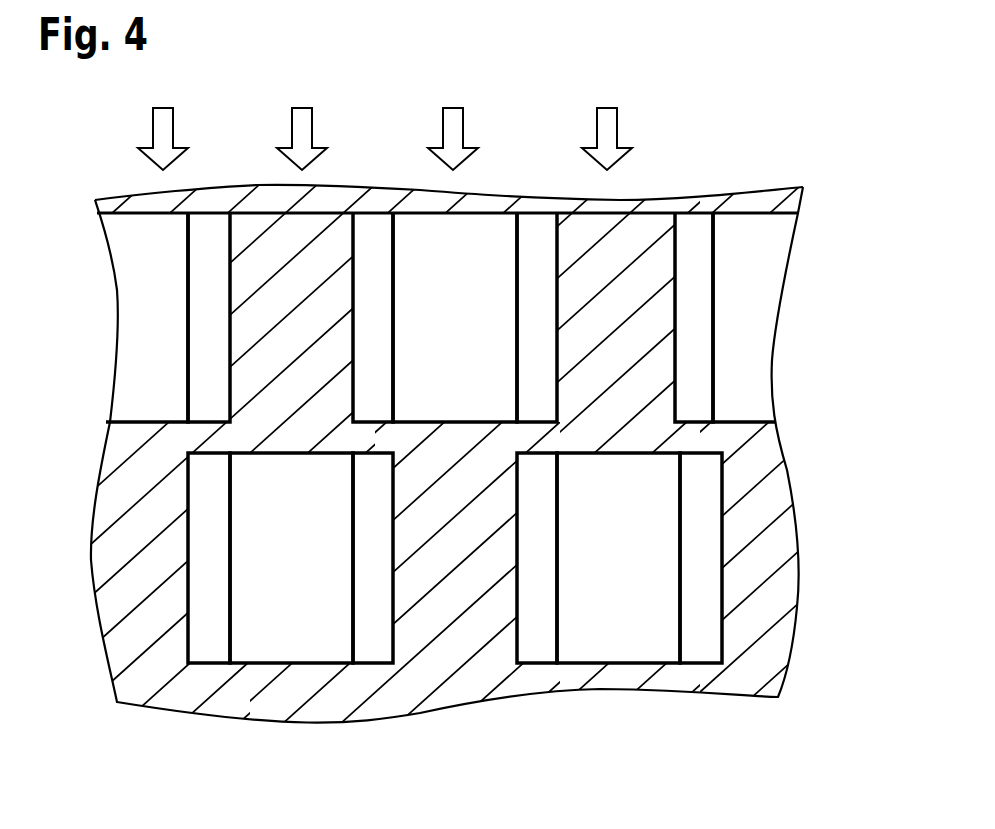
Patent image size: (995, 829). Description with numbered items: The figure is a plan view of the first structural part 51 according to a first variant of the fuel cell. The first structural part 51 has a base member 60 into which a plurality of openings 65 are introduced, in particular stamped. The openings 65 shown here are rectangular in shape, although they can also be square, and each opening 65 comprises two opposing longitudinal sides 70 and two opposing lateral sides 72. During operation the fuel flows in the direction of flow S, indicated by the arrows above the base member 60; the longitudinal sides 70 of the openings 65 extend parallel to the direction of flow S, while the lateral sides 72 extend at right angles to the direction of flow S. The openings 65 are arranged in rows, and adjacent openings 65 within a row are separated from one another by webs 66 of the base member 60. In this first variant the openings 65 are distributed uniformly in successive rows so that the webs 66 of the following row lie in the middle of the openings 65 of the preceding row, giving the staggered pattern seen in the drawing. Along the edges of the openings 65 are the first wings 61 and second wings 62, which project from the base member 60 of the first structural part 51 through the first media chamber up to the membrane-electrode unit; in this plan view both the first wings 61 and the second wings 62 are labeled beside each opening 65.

The first structural part 51 is at (404, 168).
The base member 60 is at (158, 453).
The first wings 61 is at (450, 438).
The second wings 62 is at (455, 438).
The openings 65 is at (440, 438).
The webs 66 is at (497, 414).
The longitudinal sides 70 is at (518, 487).
The lateral sides 72 is at (610, 453).
The direction of flow S is at (174, 128).